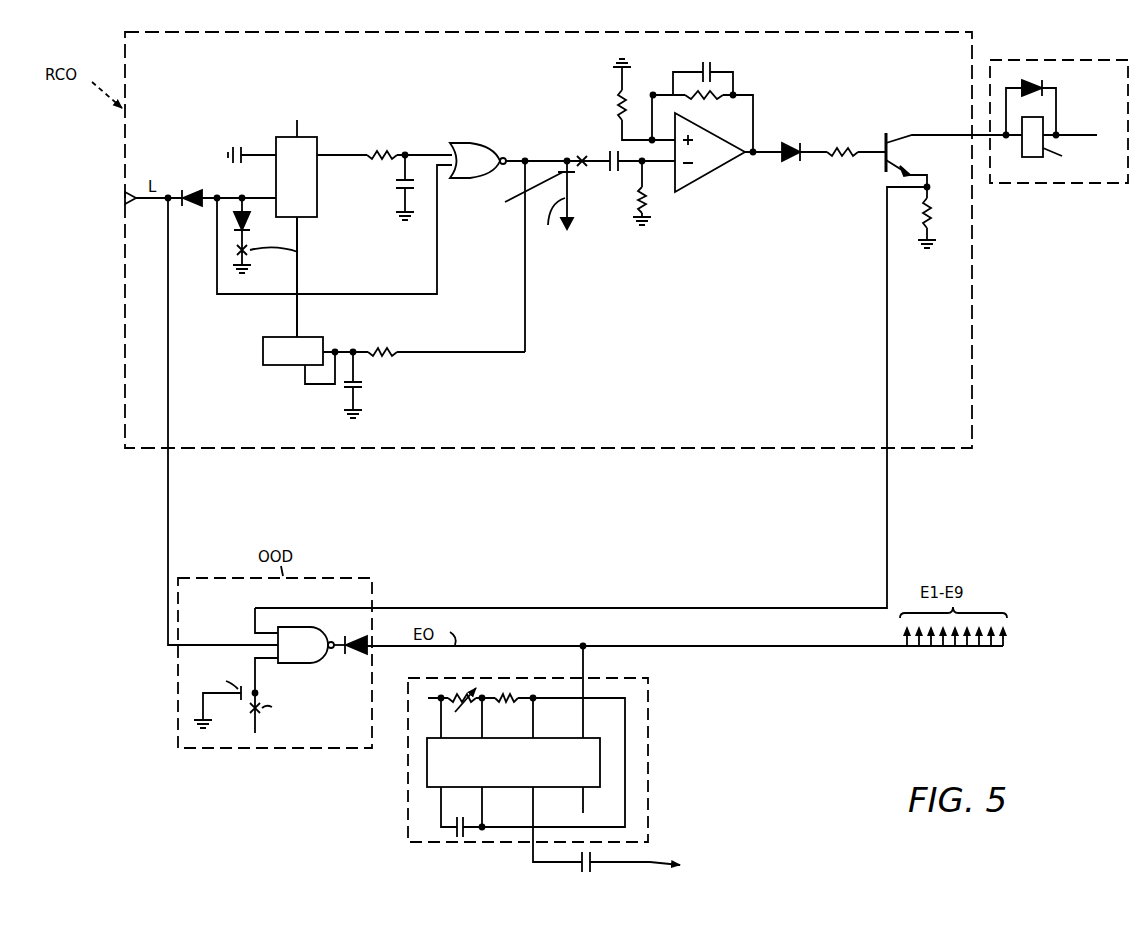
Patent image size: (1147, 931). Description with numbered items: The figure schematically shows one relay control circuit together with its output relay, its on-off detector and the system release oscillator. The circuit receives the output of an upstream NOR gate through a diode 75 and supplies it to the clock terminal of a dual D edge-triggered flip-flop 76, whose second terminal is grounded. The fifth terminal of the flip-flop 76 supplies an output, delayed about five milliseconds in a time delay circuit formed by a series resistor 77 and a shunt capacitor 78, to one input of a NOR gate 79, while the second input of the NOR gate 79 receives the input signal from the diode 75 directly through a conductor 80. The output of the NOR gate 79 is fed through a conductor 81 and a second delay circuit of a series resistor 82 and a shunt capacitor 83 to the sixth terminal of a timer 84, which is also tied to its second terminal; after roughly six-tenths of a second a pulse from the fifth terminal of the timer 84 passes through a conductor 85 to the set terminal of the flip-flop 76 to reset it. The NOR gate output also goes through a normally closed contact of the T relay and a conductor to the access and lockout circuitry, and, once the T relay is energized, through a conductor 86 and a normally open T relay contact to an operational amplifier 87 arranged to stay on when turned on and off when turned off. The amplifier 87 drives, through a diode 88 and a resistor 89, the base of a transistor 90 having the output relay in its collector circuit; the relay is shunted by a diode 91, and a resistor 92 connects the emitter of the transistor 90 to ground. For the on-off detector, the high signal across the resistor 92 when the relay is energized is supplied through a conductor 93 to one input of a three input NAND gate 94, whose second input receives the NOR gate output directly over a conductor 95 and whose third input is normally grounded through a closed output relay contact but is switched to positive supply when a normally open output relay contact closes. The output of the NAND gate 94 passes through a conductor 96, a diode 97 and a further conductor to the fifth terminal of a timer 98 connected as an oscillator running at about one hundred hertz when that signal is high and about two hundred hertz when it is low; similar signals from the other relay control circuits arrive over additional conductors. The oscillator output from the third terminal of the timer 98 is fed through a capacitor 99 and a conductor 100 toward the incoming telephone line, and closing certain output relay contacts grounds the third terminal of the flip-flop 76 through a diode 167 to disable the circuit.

The diode 75 is at (190, 178).
The dual D edge-triggered flip-flop 76 is at (317, 144).
The series resistor 77 is at (387, 146).
The shunt capacitor 78 is at (388, 183).
The diode 167 is at (262, 212).
The NOR gate 79 is at (464, 147).
The conductor 80 is at (235, 296).
The conductor 81 is at (525, 262).
The series resistor 82 is at (377, 346).
The shunt capacitor 83 is at (370, 387).
The timer 84 is at (263, 352).
The conductor 85 is at (298, 277).
The conductor 86 is at (597, 155).
The operational amplifier 87 is at (725, 166).
The diode 88 is at (790, 165).
The resistor 89 is at (845, 148).
The transistor 90 is at (910, 120).
The diode 91 is at (1030, 76).
The resistor 92 is at (937, 212).
The conductor 93 is at (887, 353).
The three input NAND gate 94 is at (243, 636).
The conductor 95 is at (166, 522).
The conductor 96 is at (336, 643).
The diode 97 is at (352, 660).
The timer 98 is at (650, 733).
The capacitor 99 is at (583, 865).
The conductor 100 is at (657, 858).